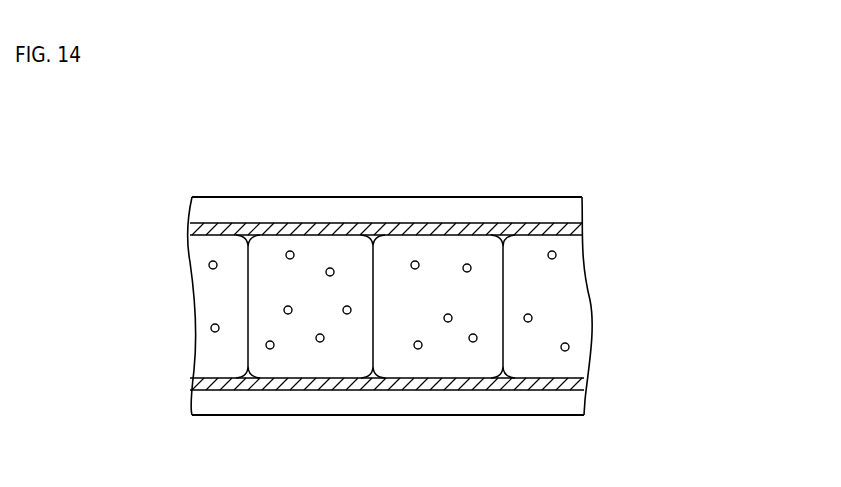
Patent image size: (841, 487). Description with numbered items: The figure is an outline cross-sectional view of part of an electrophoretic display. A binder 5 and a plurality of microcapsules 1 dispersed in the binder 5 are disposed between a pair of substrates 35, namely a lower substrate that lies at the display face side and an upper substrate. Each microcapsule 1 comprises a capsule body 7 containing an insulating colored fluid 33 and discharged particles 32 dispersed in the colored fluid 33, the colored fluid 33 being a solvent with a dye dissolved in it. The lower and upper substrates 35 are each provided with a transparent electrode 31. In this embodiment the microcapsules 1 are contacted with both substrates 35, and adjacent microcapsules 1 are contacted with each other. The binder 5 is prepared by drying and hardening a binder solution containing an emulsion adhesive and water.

The microcapsule 1 is at (272, 247).
The binder 5 is at (372, 390).
The capsule body 7 is at (373, 238).
The transparent electrode 31 is at (582, 226).
The discharged particles 32 is at (468, 264).
The colored fluid 33 is at (454, 256).
The substrate 35 is at (582, 200).